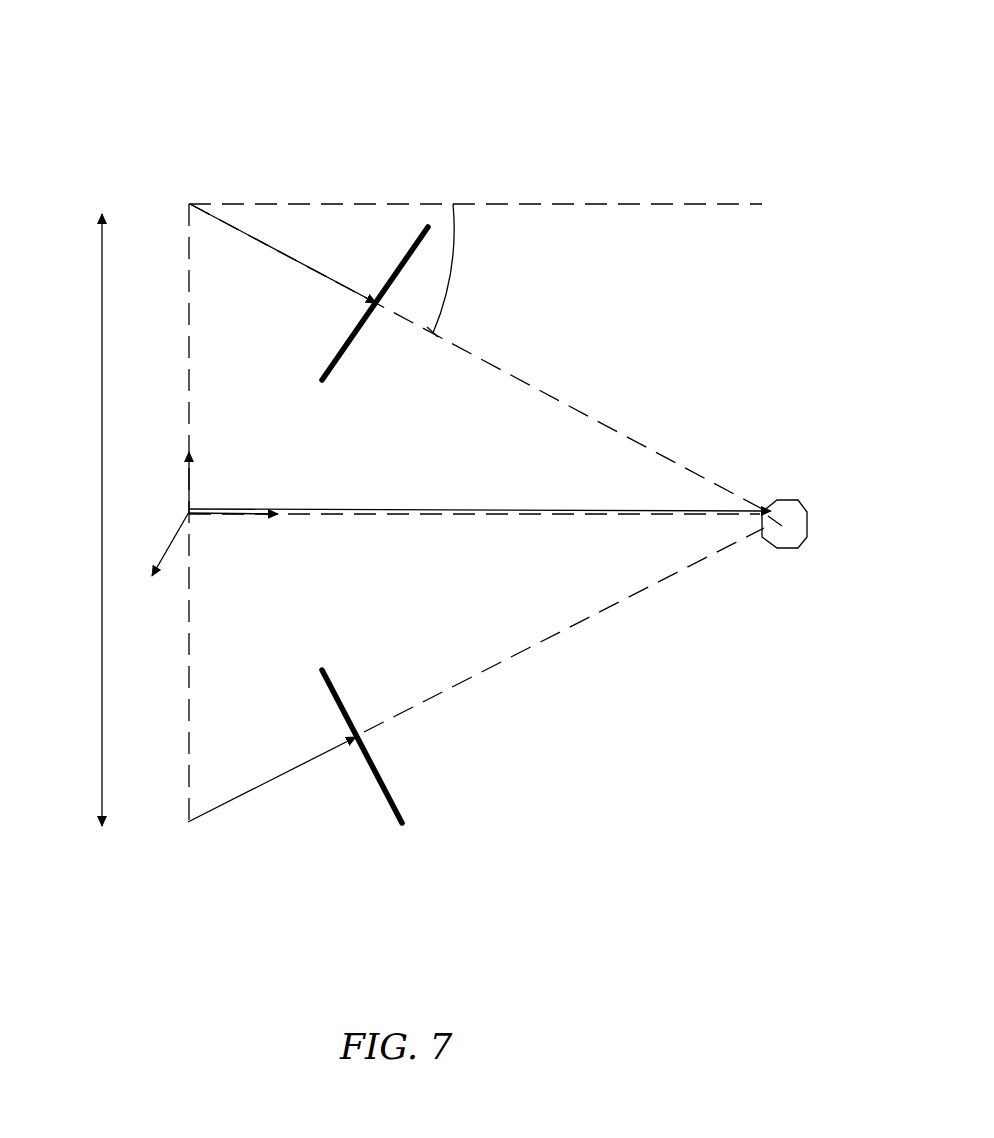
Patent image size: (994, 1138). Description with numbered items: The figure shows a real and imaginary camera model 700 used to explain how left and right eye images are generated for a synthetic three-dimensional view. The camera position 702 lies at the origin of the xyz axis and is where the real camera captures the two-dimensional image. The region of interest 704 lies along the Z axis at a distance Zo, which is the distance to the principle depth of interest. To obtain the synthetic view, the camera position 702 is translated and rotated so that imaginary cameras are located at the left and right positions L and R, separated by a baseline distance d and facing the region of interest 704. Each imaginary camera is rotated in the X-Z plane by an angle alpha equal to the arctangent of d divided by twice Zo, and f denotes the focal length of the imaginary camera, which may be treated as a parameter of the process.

The real and imaginary camera model 700 is at (447, 88).
The camera position 702 is at (190, 516).
The region of interest 704 is at (775, 500).